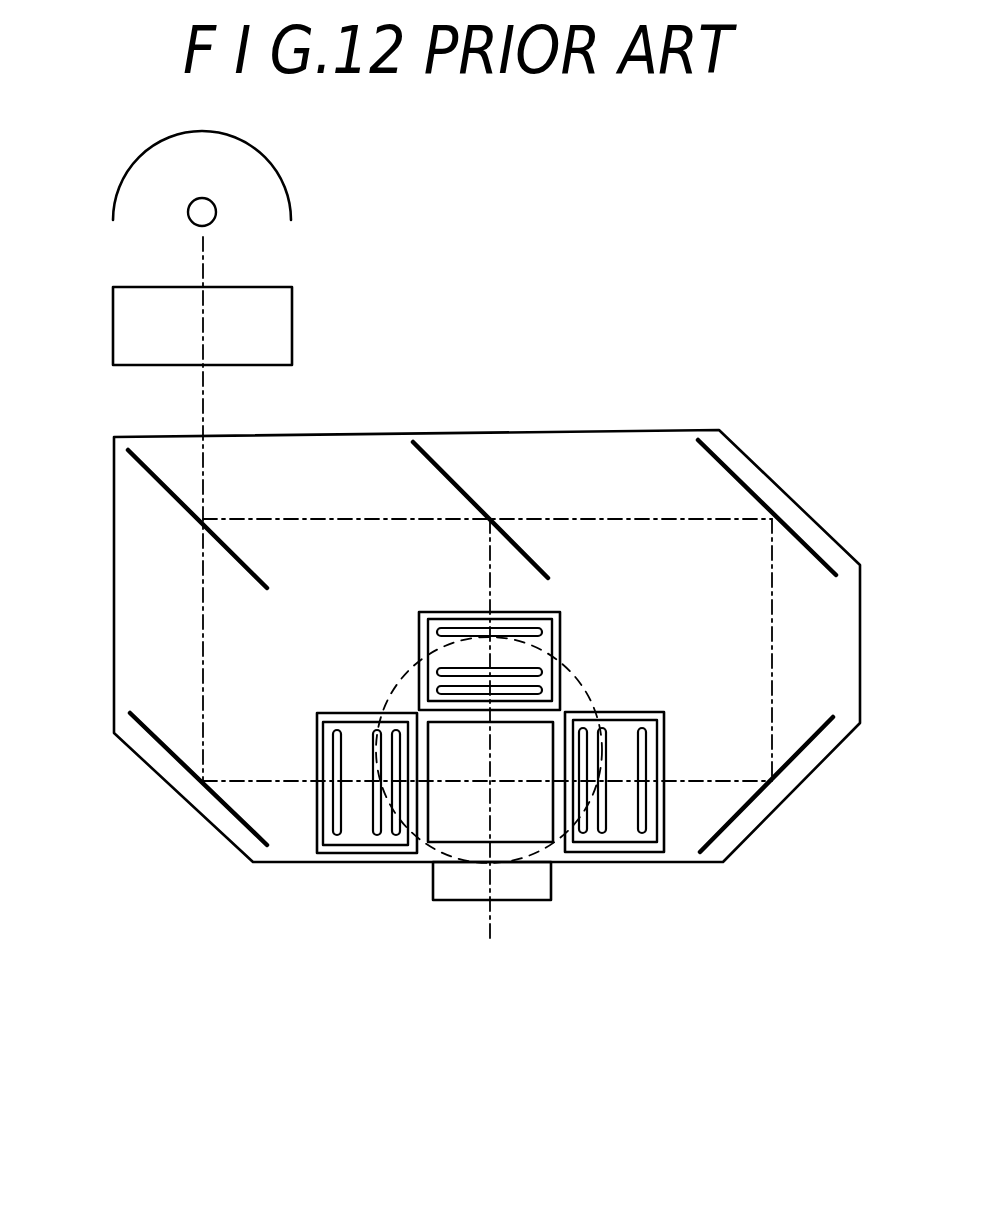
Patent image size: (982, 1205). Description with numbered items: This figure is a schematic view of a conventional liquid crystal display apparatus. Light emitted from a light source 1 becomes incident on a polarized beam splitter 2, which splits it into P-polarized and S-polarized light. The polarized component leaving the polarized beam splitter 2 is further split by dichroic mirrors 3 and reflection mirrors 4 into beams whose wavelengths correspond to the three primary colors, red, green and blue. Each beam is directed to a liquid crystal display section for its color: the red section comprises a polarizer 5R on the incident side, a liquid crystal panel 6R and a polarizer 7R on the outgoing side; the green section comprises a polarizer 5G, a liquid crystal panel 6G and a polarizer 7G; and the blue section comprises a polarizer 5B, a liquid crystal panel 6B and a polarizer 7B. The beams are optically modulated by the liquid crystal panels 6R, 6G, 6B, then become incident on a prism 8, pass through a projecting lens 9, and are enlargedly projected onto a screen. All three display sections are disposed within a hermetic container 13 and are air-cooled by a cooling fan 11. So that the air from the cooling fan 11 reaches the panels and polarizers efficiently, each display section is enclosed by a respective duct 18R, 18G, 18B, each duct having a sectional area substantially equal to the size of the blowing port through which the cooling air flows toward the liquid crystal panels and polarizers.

The light source 1 is at (257, 197).
The polarized beam splitter 2 is at (270, 312).
The dichroic mirrors 3 is at (453, 472).
The reflection mirrors 4 is at (783, 517).
The polarizer on the incident side for green 5G is at (540, 630).
The liquid crystal panel for green 6G is at (543, 672).
The polarizer on the outgoing side for green 7G is at (437, 690).
The duct for green display section 18G is at (419, 632).
The polarizer on the incident side for red 5R is at (337, 838).
The liquid crystal panel for red 6R is at (378, 838).
The polarizer on the outgoing side for red 7R is at (396, 838).
The duct for red display section 18R is at (317, 728).
The polarizer on the incident side for blue 5B is at (645, 833).
The liquid crystal panel for blue 6B is at (610, 832).
The polarizer on the outgoing side for blue 7B is at (583, 837).
The duct for blue display section 18B is at (613, 712).
The prism 8 is at (532, 738).
The projecting lens 9 is at (530, 888).
The cooling fan 11 is at (378, 708).
The hermetic container 13 is at (193, 813).